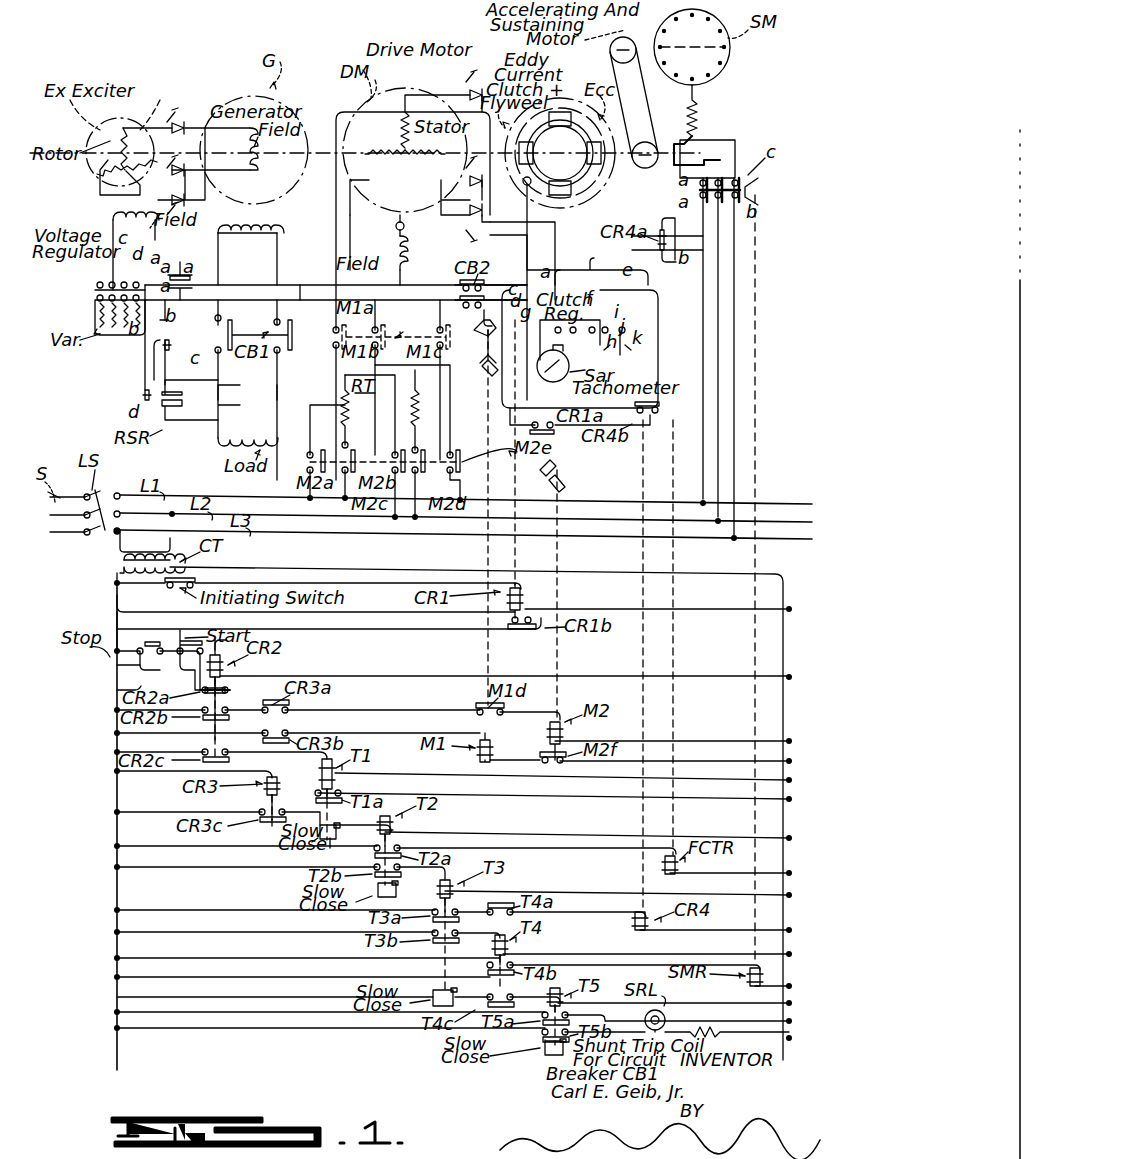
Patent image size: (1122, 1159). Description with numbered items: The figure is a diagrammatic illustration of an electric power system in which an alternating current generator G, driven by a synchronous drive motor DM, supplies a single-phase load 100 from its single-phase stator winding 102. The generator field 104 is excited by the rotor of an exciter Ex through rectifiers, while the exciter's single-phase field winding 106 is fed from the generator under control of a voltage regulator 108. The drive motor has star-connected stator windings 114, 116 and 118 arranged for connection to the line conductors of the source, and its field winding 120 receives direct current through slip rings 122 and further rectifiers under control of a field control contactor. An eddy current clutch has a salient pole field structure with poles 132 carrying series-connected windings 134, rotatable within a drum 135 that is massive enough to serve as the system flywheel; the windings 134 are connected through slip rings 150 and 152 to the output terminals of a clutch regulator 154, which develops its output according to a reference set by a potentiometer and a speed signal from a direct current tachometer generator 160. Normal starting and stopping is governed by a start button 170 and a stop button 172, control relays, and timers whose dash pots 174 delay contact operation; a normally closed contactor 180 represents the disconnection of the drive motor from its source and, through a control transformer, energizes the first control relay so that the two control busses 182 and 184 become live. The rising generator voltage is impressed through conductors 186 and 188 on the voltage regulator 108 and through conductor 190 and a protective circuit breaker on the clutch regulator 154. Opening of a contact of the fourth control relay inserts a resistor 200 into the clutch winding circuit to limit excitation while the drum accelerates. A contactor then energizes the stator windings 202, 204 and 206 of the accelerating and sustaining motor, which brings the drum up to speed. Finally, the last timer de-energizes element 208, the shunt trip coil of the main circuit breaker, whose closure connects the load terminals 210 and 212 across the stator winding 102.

The single-phase load 100 is at (215, 455).
The single-phase stator winding 102 is at (278, 236).
The field winding of the generator 104 is at (258, 159).
The single-phase field winding of the exciter 106 is at (110, 218).
The voltage regulator 108 is at (90, 292).
The stator winding 114 is at (398, 130).
The stator winding 116 is at (382, 164).
The stator winding 118 is at (430, 164).
The field winding of the motor 120 is at (395, 248).
The slip rings 122 is at (395, 232).
The poles of the field structure 132 is at (560, 153).
The winding 134 is at (600, 165).
The drum 135 is at (603, 185).
The slip ring 150 is at (525, 188).
The slip ring 152 is at (560, 153).
The clutch regulator 154 is at (660, 318).
The direct current tachometer generator 160 is at (552, 380).
The start button 170 is at (182, 620).
The stop button 172 is at (130, 660).
The dash pots 174 is at (330, 848).
The normally closed contactor 180 is at (190, 585).
The control bus 182 is at (115, 688).
The control bus 184 is at (810, 563).
The conductor 186 is at (239, 276).
The conductor 188 is at (201, 315).
The conductor 190 is at (300, 282).
The resistor 200 is at (576, 272).
The stator winding 202 is at (735, 112).
The stator winding 204 is at (707, 159).
The stator winding 206 is at (740, 135).
The shunt trip coil 208 is at (768, 1032).
The load terminal 210 is at (200, 440).
The load terminal 212 is at (274, 463).